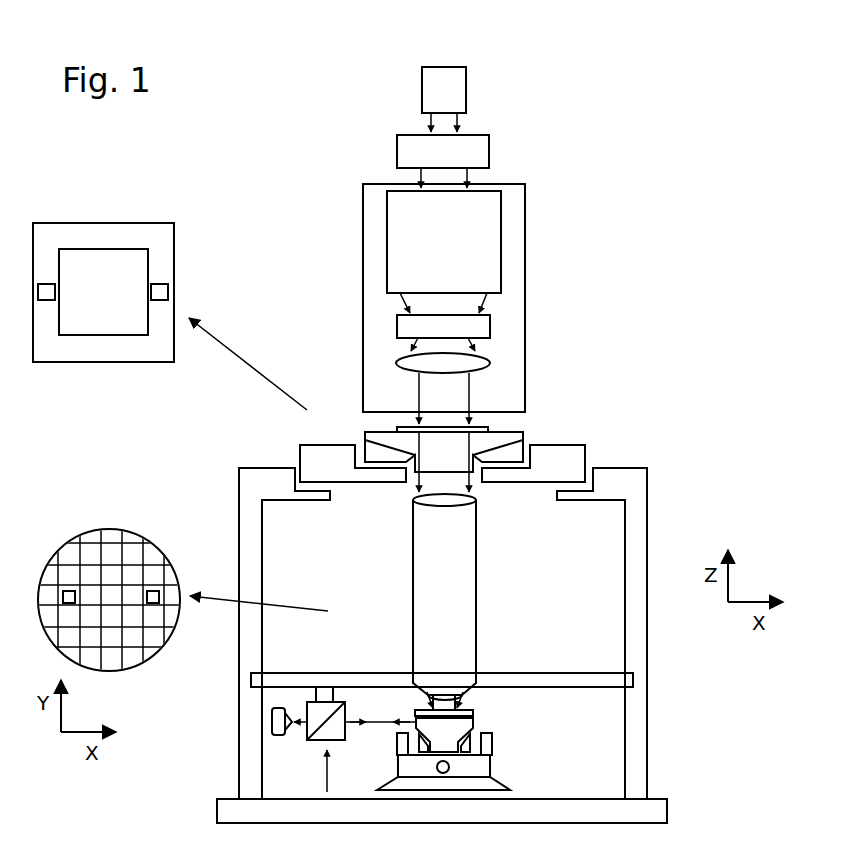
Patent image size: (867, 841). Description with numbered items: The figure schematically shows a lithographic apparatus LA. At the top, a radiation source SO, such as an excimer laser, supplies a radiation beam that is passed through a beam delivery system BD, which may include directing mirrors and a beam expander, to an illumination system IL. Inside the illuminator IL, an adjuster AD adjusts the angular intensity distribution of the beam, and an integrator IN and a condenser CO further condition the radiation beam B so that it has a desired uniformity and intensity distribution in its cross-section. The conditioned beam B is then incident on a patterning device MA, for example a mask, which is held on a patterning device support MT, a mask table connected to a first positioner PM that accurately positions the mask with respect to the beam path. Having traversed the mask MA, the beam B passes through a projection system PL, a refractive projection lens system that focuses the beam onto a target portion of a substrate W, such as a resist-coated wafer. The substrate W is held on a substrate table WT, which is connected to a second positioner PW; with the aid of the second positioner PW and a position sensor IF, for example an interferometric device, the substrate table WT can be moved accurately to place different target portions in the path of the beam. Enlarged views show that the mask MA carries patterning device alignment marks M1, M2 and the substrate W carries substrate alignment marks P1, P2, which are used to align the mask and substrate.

The radiation source SO is at (466, 94).
The beam delivery system BD is at (489, 159).
The illumination system IL is at (525, 206).
The adjuster AD is at (501, 253).
The integrator IN is at (490, 326).
The condenser CO is at (490, 362).
The lithographic apparatus LA is at (648, 297).
The patterning device MA is at (397, 430).
The patterning device alignment mark M1 is at (162, 284).
The patterning device alignment mark M2 is at (44, 284).
The radiation beam B is at (447, 422).
The patterning device support MT is at (523, 438).
The first positioner PM is at (301, 445).
The projection system PL is at (478, 580).
The substrate W is at (431, 709).
The substrate alignment mark P1 is at (68, 591).
The substrate alignment mark P2 is at (153, 591).
The substrate table WT is at (473, 720).
The second positioner PW is at (490, 770).
The position sensor IF is at (301, 746).